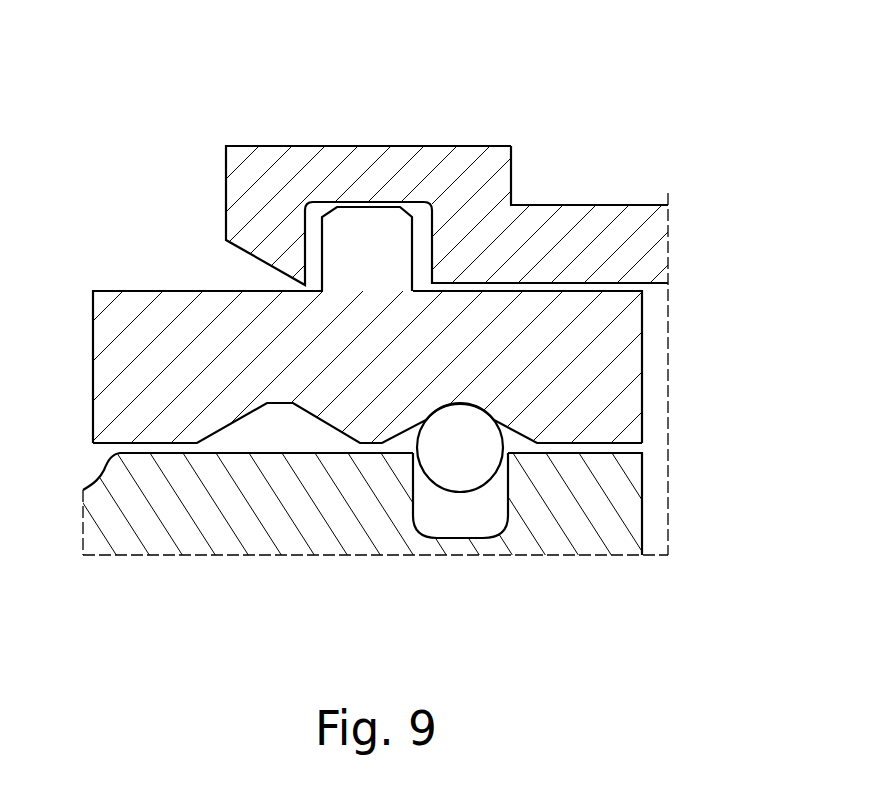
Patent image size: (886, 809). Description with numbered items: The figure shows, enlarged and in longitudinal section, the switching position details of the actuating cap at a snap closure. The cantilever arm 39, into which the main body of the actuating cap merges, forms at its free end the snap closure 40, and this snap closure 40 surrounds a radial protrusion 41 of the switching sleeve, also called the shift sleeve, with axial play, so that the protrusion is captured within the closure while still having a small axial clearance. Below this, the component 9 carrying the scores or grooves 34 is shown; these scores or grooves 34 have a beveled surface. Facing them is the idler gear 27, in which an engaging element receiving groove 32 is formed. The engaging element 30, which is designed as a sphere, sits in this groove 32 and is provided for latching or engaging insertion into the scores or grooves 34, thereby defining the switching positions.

The housing body 9 is at (610, 355).
The idler gear 27 is at (210, 518).
The engaging element 30 is at (485, 468).
The engaging element receiving groove 32 is at (462, 523).
The scores/grooves 34 is at (265, 420).
The cantilever arm 39 is at (557, 245).
The snap closure 40 is at (322, 133).
The radial protrusion 41 is at (373, 228).